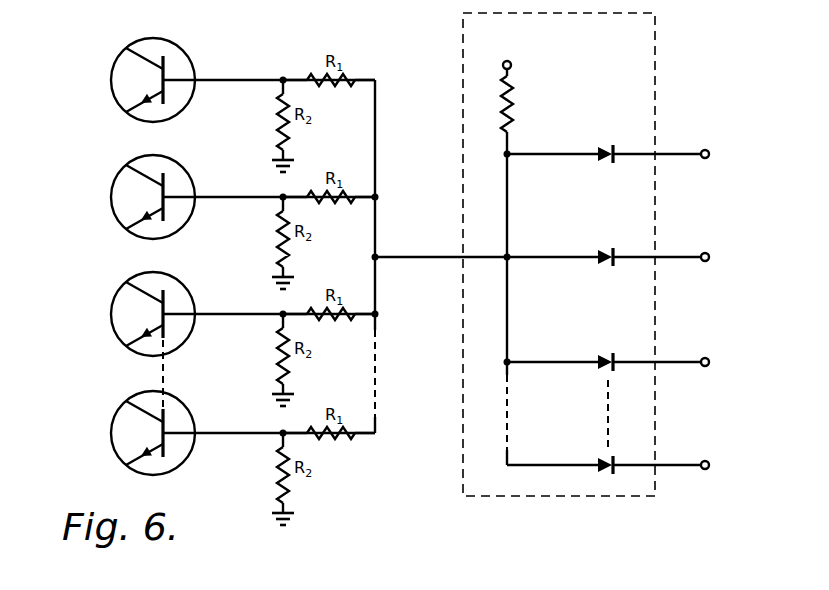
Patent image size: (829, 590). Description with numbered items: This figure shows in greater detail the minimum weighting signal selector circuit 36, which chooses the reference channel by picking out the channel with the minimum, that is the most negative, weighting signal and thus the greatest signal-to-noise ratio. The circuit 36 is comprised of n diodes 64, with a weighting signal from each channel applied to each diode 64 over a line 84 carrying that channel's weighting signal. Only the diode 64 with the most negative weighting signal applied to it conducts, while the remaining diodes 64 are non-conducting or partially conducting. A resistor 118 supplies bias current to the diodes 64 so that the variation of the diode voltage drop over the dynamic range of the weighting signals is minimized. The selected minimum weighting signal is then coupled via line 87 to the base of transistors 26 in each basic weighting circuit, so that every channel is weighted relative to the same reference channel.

The transistors 26 is at (116, 64).
The line 87 is at (437, 257).
The minimum weighting signal selector circuit 36 is at (657, 478).
The resistor 118 is at (510, 90).
The diodes 64 is at (612, 143).
The line 84 is at (663, 154).